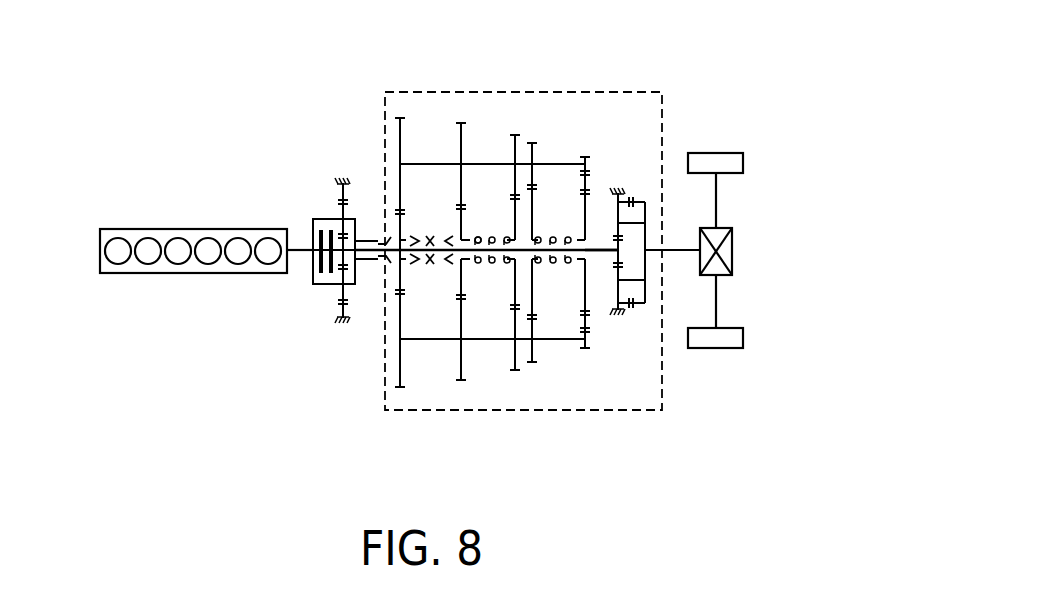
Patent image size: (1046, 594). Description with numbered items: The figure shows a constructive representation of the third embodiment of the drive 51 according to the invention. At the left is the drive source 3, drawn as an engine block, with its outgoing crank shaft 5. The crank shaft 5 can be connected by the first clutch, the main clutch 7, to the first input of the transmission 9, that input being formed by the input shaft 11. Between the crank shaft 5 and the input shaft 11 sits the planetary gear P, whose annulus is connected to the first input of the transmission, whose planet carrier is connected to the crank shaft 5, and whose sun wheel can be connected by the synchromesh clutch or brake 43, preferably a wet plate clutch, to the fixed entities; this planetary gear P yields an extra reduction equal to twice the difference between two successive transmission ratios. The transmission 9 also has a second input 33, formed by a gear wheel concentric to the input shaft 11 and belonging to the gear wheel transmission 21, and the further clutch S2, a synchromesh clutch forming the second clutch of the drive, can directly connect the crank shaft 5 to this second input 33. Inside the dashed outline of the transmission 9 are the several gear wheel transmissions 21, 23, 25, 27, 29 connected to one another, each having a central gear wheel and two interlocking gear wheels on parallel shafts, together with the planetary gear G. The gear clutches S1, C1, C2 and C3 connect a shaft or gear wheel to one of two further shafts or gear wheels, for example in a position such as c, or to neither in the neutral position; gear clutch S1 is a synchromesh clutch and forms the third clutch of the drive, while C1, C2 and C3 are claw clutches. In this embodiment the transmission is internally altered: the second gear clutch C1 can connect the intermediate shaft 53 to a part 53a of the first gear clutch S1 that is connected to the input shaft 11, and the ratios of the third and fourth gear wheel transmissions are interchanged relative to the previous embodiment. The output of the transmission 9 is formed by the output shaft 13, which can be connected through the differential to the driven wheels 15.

The drive 51 is at (156, 92).
The drive source 3 is at (160, 232).
The crank shaft 5 is at (295, 247).
The main clutch 7 is at (323, 285).
The brake/clutch 43 is at (337, 187).
The input shaft 11 is at (367, 240).
The second input 33 is at (392, 242).
The transmission 9 is at (651, 89).
The gear wheel transmission 21 is at (400, 114).
The gear wheel transmission 23 is at (461, 120).
The gear wheel transmission 25 is at (515, 131).
The gear wheel transmission 27 is at (532, 139).
The gear wheel transmission 29 is at (585, 153).
The intermediate shaft 53 is at (598, 247).
The clutch element 53a is at (479, 237).
The output shaft 13 is at (681, 249).
The driven wheels 15 is at (733, 163).
The clutch position c is at (645, 281).
The planetary gear P is at (342, 160).
The planetary gear G is at (627, 167).
The gear clutch S1 is at (429, 283).
The further clutch S2 is at (382, 274).
The gear clutch C1 is at (486, 275).
The gear clutch C2 is at (559, 277).
The gear clutch C3 is at (634, 320).